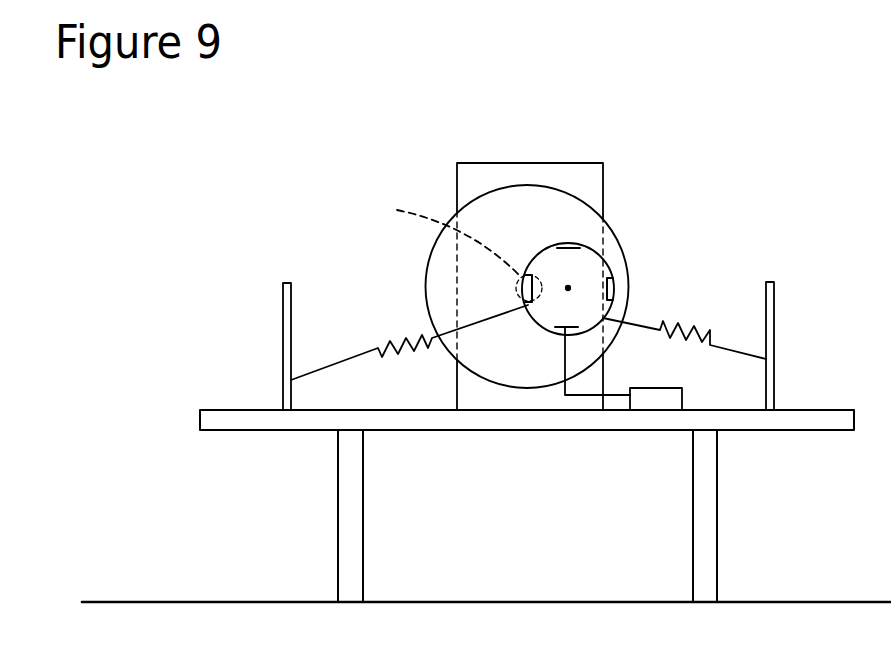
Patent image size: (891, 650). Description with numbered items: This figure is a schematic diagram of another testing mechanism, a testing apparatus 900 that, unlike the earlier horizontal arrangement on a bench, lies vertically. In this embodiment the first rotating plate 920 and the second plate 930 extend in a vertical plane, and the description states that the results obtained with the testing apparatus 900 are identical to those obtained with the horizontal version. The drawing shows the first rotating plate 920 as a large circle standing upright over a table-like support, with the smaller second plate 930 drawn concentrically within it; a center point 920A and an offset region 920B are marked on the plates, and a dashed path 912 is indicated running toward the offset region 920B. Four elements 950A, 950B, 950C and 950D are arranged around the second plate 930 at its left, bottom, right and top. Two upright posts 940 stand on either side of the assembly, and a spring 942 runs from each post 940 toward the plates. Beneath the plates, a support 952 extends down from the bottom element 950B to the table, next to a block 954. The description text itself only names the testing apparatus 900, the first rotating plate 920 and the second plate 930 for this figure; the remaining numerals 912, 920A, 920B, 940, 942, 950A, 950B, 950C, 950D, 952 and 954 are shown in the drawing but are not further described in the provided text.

The testing apparatus 900 is at (578, 38).
The optical path 912 is at (436, 234).
The first rotating plate 920 is at (613, 228).
The chamber center 920A is at (568, 288).
The chamber port 920B is at (531, 289).
The second plate 930 is at (613, 280).
The support post 940 is at (283, 287).
The spring 942 is at (378, 345).
The electrode 950A is at (532, 277).
The electrode 950B is at (577, 327).
The electrode 950C is at (615, 272).
The electrode 950D is at (568, 248).
The electrode support 952 is at (573, 397).
The base block 954 is at (655, 400).